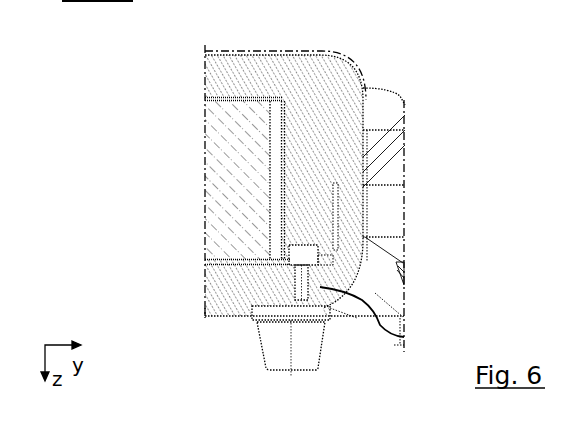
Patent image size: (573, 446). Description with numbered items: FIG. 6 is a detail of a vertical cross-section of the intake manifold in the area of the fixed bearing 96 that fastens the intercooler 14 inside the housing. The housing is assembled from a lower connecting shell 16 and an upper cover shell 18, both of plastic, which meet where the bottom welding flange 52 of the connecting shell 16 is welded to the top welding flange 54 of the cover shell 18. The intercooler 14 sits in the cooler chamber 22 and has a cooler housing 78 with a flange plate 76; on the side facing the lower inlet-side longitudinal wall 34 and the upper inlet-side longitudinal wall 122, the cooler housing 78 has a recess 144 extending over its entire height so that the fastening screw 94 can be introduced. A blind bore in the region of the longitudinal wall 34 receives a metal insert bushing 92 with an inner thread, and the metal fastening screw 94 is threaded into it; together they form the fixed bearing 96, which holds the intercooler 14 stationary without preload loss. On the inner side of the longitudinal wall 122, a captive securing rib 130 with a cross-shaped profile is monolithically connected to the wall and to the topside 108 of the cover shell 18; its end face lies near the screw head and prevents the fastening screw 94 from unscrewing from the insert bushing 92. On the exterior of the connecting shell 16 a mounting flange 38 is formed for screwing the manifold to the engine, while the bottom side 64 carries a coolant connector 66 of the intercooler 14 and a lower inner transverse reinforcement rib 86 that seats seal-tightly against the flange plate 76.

The intercooler 14 is at (233, 181).
The connecting shell 16 is at (207, 312).
The cover shell 18 is at (224, 83).
The cooler chamber 22 is at (262, 152).
The inlet-side longitudinal wall 34 is at (360, 212).
The mounting flange 38 is at (395, 297).
The bottom welding flange 52 is at (353, 185).
The top welding flange 54 is at (358, 173).
The bottom side 64 is at (253, 311).
The coolant connector 66 is at (300, 347).
The flange plate 76 is at (295, 266).
The cooler housing 78 is at (207, 99).
The lower inner transverse reinforcement rib 86 is at (210, 291).
The insert bushing 92 is at (400, 345).
The fastening screw 94 is at (302, 263).
The fixed bearing 96 is at (268, 272).
The topside 108 is at (231, 57).
The upper inlet-side longitudinal wall 122 is at (363, 127).
The captive securing rib 130 is at (305, 212).
The recess 144 is at (270, 200).